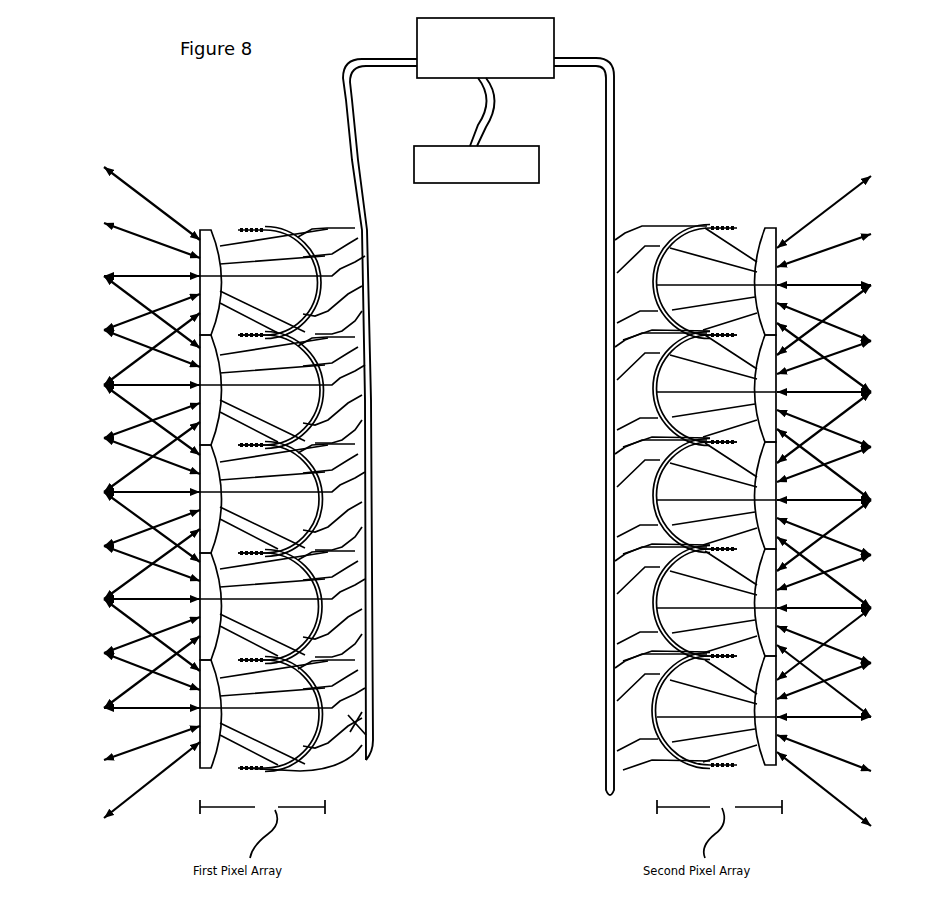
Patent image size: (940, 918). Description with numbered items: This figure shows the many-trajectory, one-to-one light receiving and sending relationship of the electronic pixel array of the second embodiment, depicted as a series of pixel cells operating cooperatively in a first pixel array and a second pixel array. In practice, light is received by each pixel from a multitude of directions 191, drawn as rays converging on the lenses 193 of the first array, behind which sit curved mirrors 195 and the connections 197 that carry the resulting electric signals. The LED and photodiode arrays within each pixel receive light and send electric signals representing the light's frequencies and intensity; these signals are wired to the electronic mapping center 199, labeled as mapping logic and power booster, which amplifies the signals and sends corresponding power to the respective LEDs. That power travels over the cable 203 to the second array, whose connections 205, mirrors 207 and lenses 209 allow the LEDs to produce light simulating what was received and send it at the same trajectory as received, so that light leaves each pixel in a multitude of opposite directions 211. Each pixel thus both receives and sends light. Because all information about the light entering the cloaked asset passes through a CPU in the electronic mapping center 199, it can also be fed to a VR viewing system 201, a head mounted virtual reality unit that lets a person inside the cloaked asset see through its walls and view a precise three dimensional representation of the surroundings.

The multitude of directions 191 is at (140, 190).
The first lens array 193 is at (206, 229).
The first mirror array 195 is at (256, 228).
The first pixel array connections 197 is at (326, 230).
The electronic mapping center 199 is at (440, 78).
The VR viewing system 201 is at (472, 183).
The cable 203 is at (614, 124).
The second pixel array connections 205 is at (654, 228).
The second mirror array 207 is at (722, 228).
The second lens array 209 is at (770, 228).
The multitude of opposite directions 211 is at (827, 208).